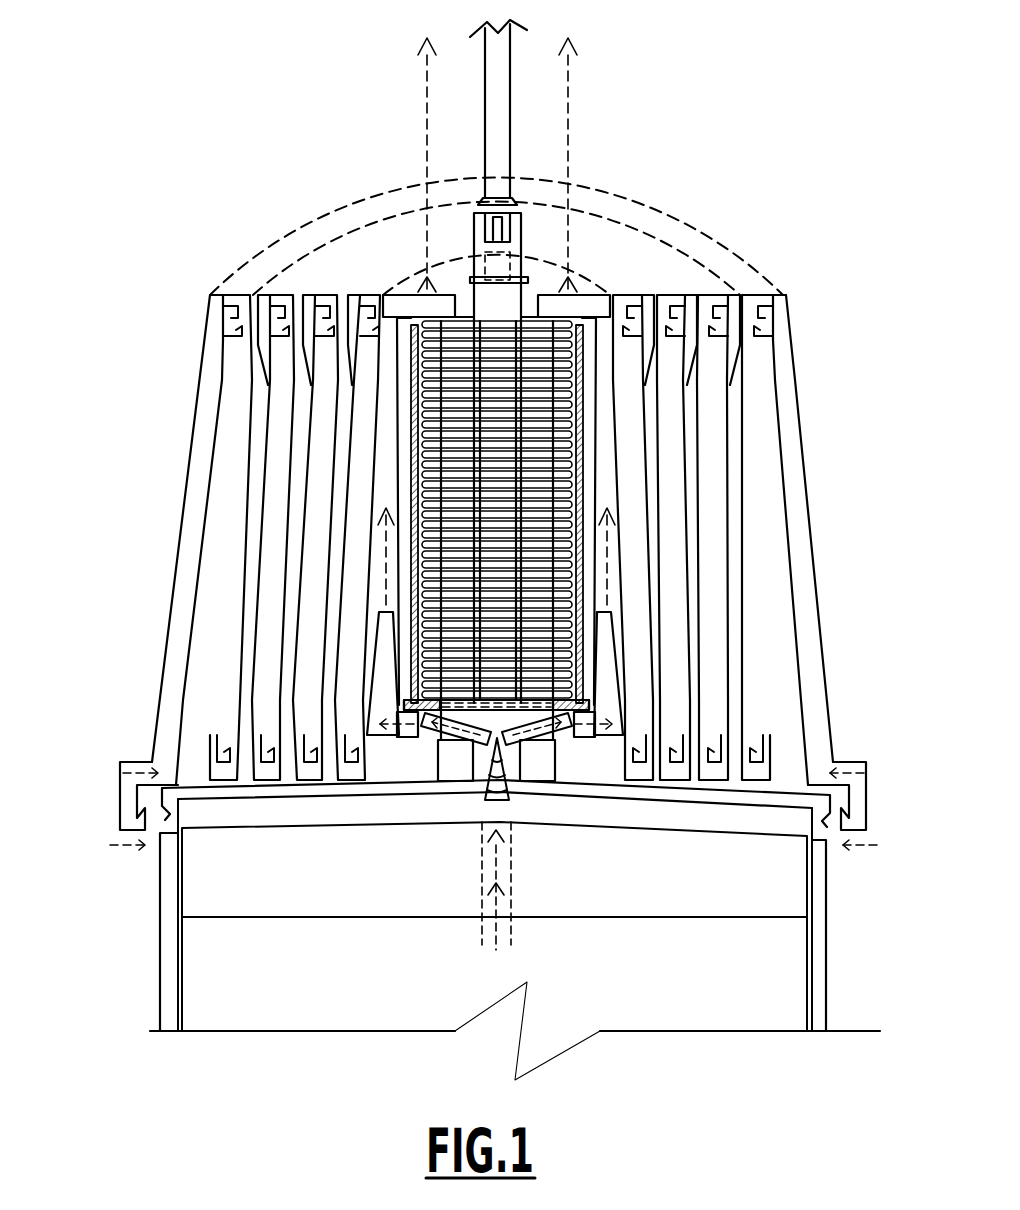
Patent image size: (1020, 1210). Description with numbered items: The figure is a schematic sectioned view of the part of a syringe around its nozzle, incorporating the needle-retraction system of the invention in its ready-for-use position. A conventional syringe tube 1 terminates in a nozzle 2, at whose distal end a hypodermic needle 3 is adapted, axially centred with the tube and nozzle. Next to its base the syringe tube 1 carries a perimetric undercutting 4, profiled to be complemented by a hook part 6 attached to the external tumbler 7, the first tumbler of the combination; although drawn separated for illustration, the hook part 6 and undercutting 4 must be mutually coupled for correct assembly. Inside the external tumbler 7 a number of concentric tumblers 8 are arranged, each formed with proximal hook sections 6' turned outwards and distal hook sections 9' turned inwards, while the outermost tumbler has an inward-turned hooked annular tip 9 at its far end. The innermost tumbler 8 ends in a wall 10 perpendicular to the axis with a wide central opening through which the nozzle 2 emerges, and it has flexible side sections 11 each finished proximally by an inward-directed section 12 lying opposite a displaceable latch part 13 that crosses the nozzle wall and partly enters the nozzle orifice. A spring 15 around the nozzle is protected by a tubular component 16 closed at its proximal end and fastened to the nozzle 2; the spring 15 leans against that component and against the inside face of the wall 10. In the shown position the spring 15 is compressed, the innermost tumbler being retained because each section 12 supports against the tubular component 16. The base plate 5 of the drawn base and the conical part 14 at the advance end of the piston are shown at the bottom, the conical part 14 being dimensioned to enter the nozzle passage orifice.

The syringe tube 1 is at (165, 978).
The nozzle 2 is at (502, 302).
The hypodermic needle 3 is at (500, 130).
The perimetric undercutting 4 is at (182, 833).
The base top plate 5 is at (692, 792).
The hook part 6 is at (465, 766).
The proximal hook sections 6' is at (489, 817).
The external tumbler 7 is at (190, 560).
The tumblers 8 is at (368, 670).
The upper fin hook 9 is at (449, 321).
The distal hook sections 9' is at (499, 248).
The wall 10 is at (410, 308).
The flexible side sections 11 is at (393, 687).
The inward-directed section 12 is at (402, 735).
The latch part 13 is at (457, 740).
The conical part 14 is at (507, 797).
The spring 15 is at (583, 480).
The tubular component 16 is at (580, 565).